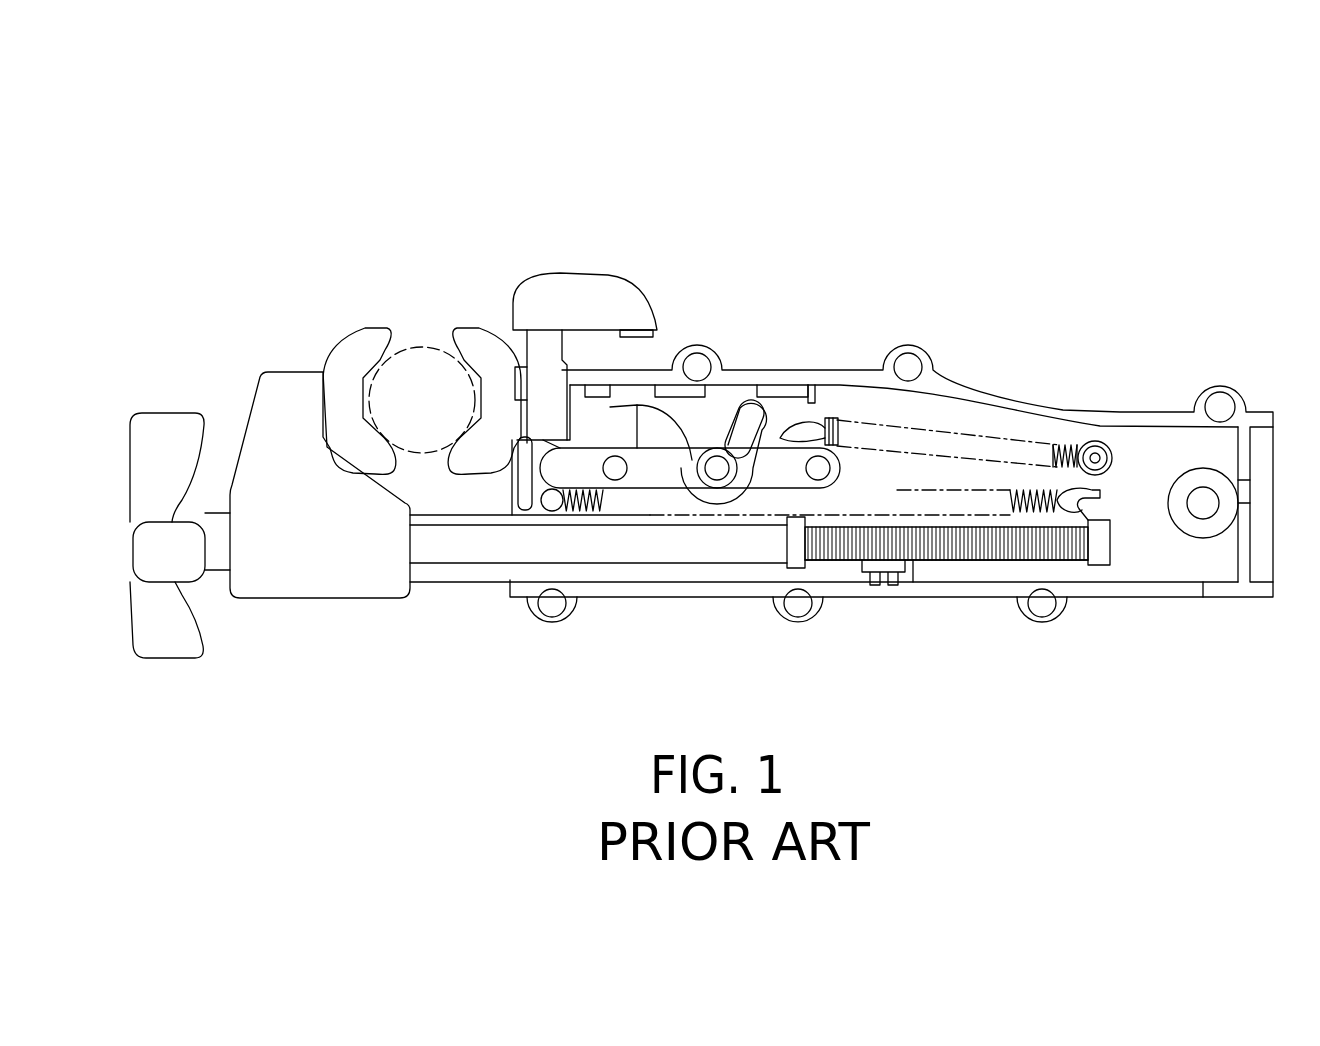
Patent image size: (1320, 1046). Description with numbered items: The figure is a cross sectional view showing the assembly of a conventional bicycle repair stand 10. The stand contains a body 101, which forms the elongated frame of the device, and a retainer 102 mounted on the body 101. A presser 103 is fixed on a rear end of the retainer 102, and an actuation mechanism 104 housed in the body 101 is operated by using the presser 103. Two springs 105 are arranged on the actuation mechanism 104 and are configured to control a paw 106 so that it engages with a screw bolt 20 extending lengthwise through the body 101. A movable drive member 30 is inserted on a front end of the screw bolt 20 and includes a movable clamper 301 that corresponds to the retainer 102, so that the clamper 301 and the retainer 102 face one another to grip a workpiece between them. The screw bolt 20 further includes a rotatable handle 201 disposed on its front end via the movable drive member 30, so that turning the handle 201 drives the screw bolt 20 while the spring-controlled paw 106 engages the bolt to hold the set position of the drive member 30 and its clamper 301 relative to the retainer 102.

The conventional bicycle repair stand 10 is at (857, 232).
The body 101 is at (1110, 405).
The retainer 102 is at (467, 330).
The presser 103 is at (582, 295).
The actuation mechanism 104 is at (722, 402).
The springs 105 is at (1018, 487).
The paw 106 is at (882, 525).
The screw bolt 20 is at (985, 570).
The rotatable handle 201 is at (178, 428).
The movable drive member 30 is at (350, 573).
The movable clamper 301 is at (360, 345).